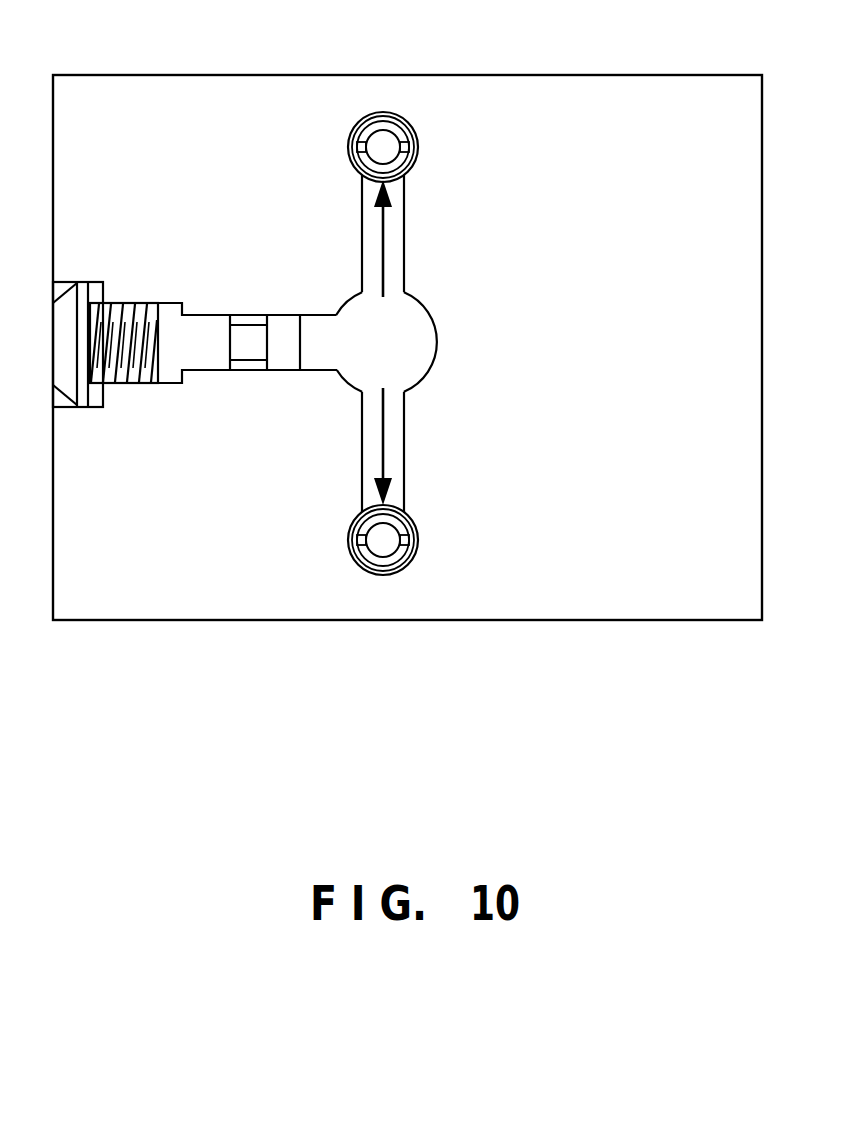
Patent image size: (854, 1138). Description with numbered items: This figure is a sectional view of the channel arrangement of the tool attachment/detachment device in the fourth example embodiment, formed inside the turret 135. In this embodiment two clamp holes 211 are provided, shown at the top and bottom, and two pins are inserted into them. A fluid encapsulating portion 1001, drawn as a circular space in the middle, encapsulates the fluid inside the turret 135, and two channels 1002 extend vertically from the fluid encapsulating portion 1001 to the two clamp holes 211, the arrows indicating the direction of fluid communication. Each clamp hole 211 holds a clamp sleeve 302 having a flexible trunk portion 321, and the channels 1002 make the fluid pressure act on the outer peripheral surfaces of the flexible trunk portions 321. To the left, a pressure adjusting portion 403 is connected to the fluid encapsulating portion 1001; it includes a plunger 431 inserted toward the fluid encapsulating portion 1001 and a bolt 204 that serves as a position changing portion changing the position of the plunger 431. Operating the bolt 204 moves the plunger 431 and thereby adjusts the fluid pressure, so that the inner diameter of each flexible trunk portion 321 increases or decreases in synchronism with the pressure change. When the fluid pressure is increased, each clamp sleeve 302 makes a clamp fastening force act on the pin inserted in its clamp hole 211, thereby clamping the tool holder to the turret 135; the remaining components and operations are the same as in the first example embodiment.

The turret 135 is at (638, 609).
The pressure adjusting portion 403 is at (243, 272).
The bolt 204 is at (131, 310).
The plunger 431 is at (222, 320).
The fluid encapsulating portion 1001 is at (428, 348).
The channel 1002 is at (404, 230).
The clamp sleeve 302 is at (373, 108).
The flexible trunk portion 321 is at (418, 148).
The clamp hole 211 is at (348, 150).